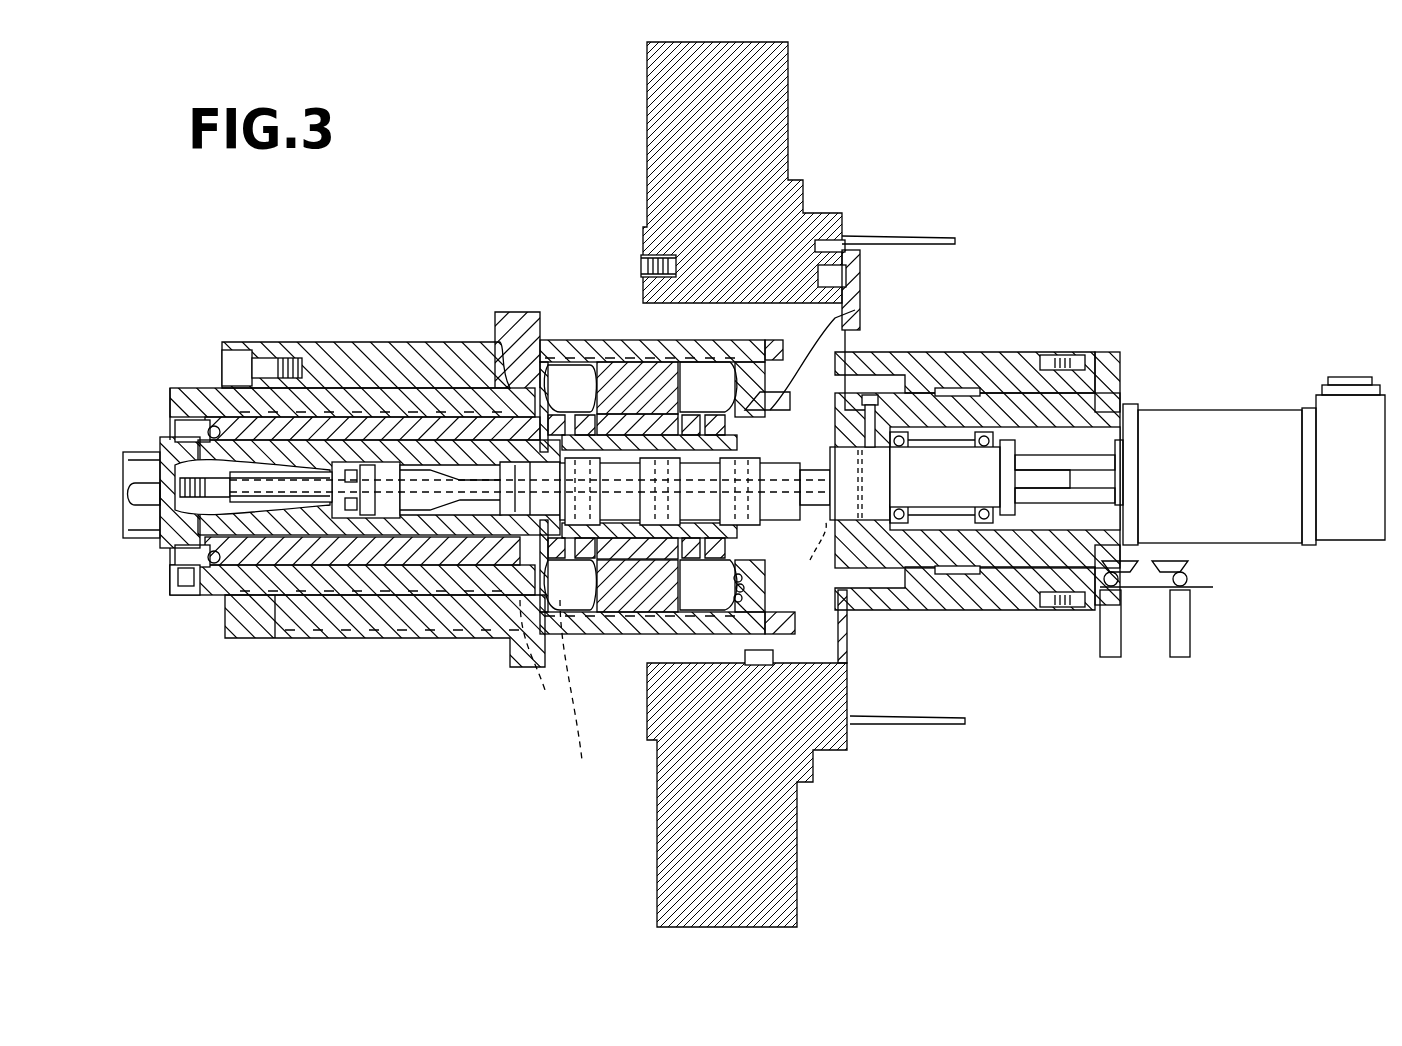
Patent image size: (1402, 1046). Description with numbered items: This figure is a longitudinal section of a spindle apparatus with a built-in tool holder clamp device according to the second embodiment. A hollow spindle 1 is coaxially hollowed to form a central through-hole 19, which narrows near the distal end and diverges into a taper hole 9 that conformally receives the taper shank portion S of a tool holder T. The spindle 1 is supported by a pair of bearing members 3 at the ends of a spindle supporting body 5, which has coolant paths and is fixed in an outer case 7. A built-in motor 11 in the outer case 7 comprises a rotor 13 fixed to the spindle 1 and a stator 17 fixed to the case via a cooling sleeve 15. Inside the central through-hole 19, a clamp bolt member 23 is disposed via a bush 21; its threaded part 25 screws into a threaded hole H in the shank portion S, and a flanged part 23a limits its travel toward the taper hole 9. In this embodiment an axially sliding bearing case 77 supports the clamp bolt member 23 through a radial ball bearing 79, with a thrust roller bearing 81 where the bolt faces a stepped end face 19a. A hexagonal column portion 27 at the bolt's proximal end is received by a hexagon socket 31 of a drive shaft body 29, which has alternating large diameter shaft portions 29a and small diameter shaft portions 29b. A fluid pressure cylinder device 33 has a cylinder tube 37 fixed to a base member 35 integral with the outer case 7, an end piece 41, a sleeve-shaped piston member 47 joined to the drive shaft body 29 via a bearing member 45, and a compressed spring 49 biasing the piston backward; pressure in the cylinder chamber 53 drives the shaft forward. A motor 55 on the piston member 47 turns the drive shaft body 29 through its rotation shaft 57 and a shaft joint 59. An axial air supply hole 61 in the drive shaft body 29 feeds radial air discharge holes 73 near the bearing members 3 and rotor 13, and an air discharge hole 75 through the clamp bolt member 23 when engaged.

The spindle 1 is at (270, 600).
The bearing members 3 is at (482, 360).
The spindle supporting body 5 is at (396, 560).
The outer case 7 is at (270, 350).
The taper hole 9 is at (180, 560).
The built-in motor 11 is at (525, 330).
The rotor 13 is at (830, 372).
The cooling sleeve 15 is at (570, 385).
The stator 17 is at (636, 385).
The central through-hole 19 is at (420, 425).
The stepped end face 19a is at (300, 440).
The bush 21 is at (245, 600).
The clamp bolt member 23 is at (310, 470).
The flanged part 23a is at (340, 470).
The threaded part 25 is at (208, 590).
The hexagonal column portion 27 is at (422, 560).
The drive shaft body 29 is at (470, 550).
The large diameter shaft portions 29a is at (445, 560).
The small diameter shaft portions 29b is at (473, 460).
The hexagon socket 31 is at (405, 470).
The fluid pressure cylinder device 33 is at (965, 352).
The base member 35 is at (790, 128).
The cylinder tube 37 is at (930, 358).
The end piece 41 is at (1098, 352).
The bearing member 45 is at (898, 432).
The piston member 47 is at (996, 600).
The compressed spring 49 is at (1000, 447).
The cylinder chamber 53 is at (1030, 595).
The motor 55 is at (1175, 412).
The rotation shaft 57 is at (1120, 455).
The shaft joint 59 is at (1123, 500).
The air supply hole 61 is at (836, 515).
The air discharge holes 73 is at (742, 758).
The air discharge hole 75 is at (300, 605).
The bearing case 77 is at (380, 600).
The radial ball bearing 79 is at (368, 468).
The thrust roller bearing 81 is at (350, 600).
The threaded hole H is at (212, 430).
The shank portion S is at (182, 440).
The tool holder T is at (140, 540).